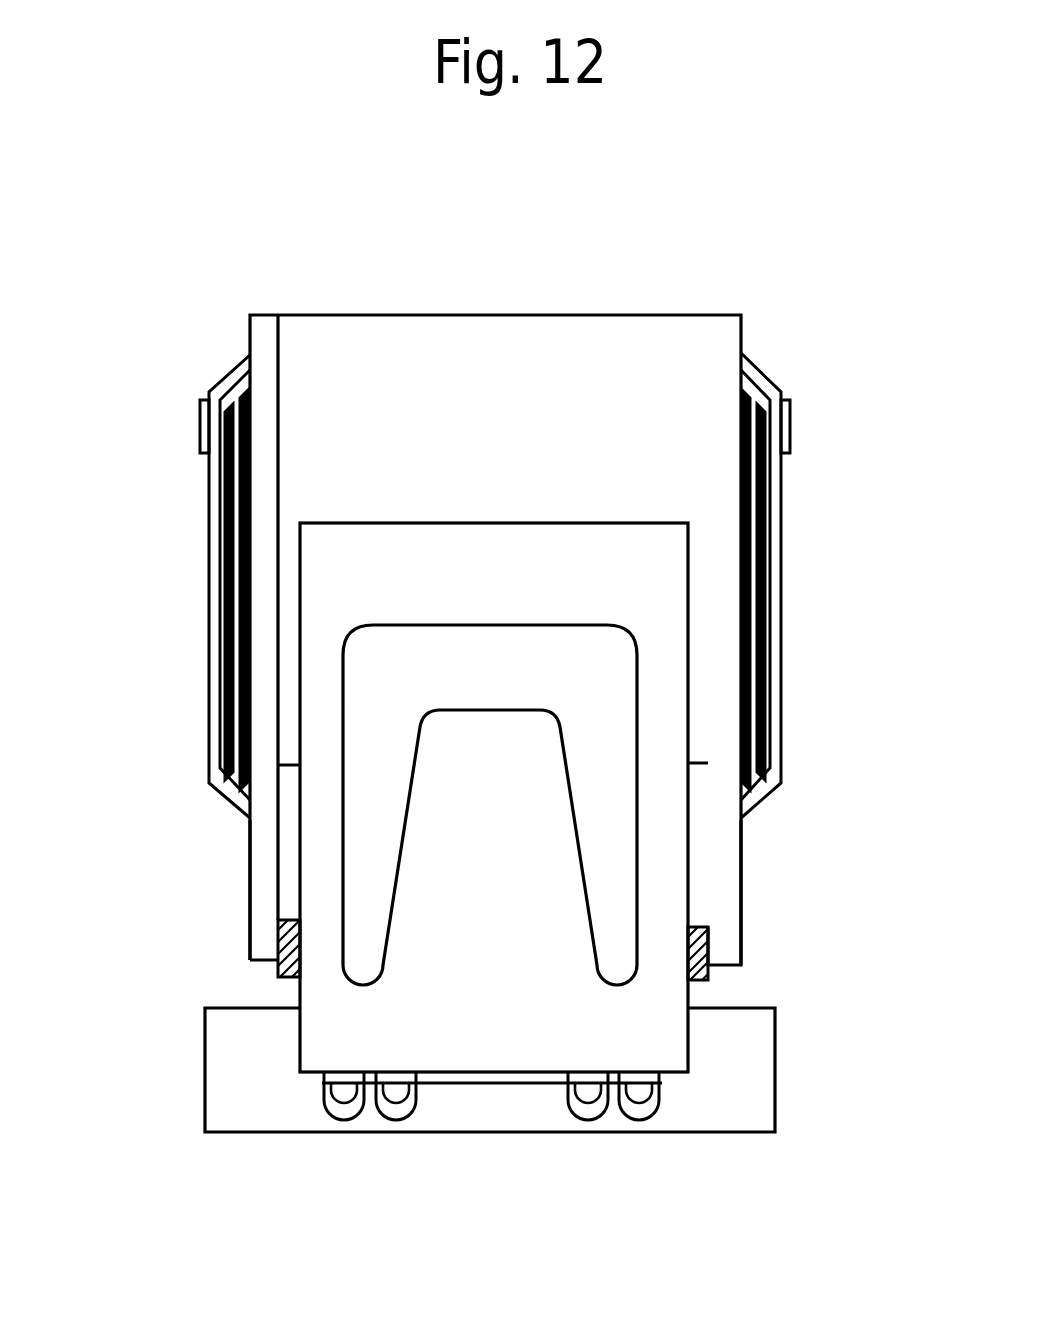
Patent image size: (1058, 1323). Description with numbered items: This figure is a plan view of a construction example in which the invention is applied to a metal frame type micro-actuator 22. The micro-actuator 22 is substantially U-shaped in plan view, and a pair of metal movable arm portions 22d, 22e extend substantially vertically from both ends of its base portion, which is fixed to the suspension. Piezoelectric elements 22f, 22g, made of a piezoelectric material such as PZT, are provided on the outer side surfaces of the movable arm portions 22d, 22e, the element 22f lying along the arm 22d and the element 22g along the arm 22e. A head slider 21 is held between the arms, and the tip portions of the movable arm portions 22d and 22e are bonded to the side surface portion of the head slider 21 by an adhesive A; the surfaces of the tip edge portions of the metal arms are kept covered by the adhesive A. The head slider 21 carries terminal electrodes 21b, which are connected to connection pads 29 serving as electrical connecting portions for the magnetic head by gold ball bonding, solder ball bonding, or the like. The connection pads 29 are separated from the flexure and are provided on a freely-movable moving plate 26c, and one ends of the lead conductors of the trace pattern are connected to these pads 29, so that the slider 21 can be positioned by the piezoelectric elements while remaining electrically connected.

The metal frame type micro-actuator 22 is at (664, 302).
The piezoelectric element 22g is at (208, 543).
The piezoelectric element 22f is at (782, 541).
The movable arm portion 22e is at (249, 852).
The movable arm portion 22d is at (742, 848).
The head slider 21 is at (290, 705).
The terminal electrodes 21b is at (348, 1073).
The connection pads 29 is at (346, 1108).
The moving plate 26c is at (776, 1030).
The adhesive A is at (286, 968).